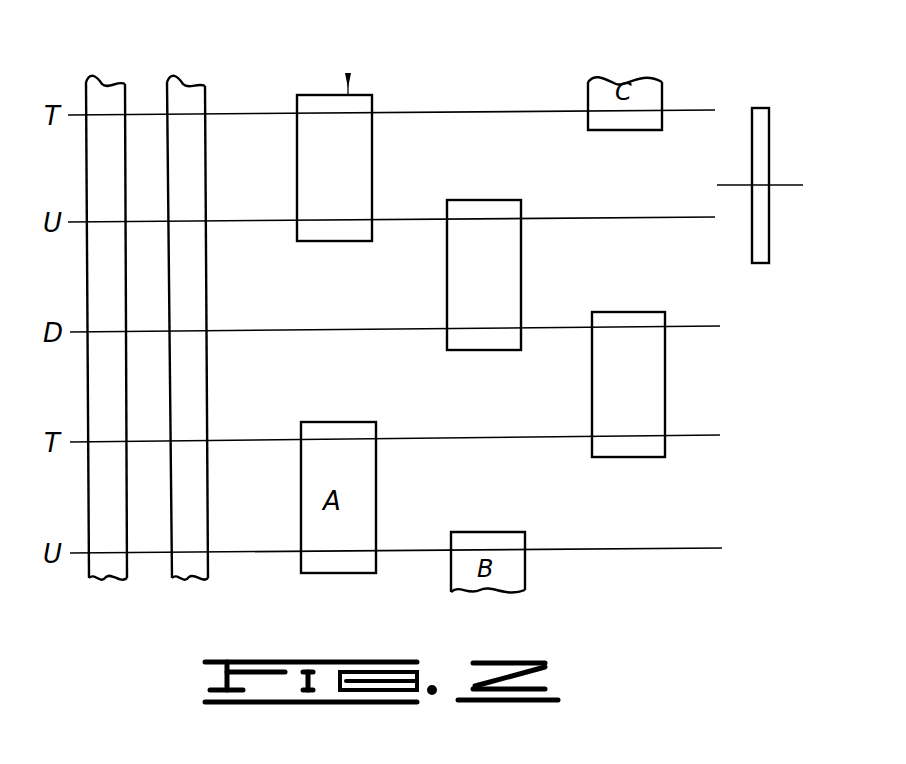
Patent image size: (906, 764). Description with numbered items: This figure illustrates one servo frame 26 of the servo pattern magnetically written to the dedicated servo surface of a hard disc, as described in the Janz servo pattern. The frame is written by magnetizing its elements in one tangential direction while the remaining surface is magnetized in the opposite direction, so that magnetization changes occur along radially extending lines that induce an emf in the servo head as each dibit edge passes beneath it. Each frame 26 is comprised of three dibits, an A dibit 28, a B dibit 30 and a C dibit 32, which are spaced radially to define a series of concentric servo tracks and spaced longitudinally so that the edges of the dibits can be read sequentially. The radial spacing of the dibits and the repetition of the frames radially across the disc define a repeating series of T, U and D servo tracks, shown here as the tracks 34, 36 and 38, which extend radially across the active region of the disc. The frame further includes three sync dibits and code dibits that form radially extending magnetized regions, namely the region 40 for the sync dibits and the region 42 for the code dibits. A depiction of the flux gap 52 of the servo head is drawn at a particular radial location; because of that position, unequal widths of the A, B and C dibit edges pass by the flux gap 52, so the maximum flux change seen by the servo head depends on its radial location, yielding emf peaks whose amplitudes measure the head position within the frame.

The servo frame 26 is at (348, 73).
The A dibit 28 is at (354, 140).
The B dibit 30 is at (477, 210).
The C dibit 32 is at (630, 320).
The T servo track 34 is at (252, 112).
The U servo track 36 is at (213, 222).
The D servo track 38 is at (223, 330).
The sync dibit magnetized region 40 is at (185, 142).
The code dibit magnetized region 42 is at (108, 135).
The flux gap 52 is at (762, 162).